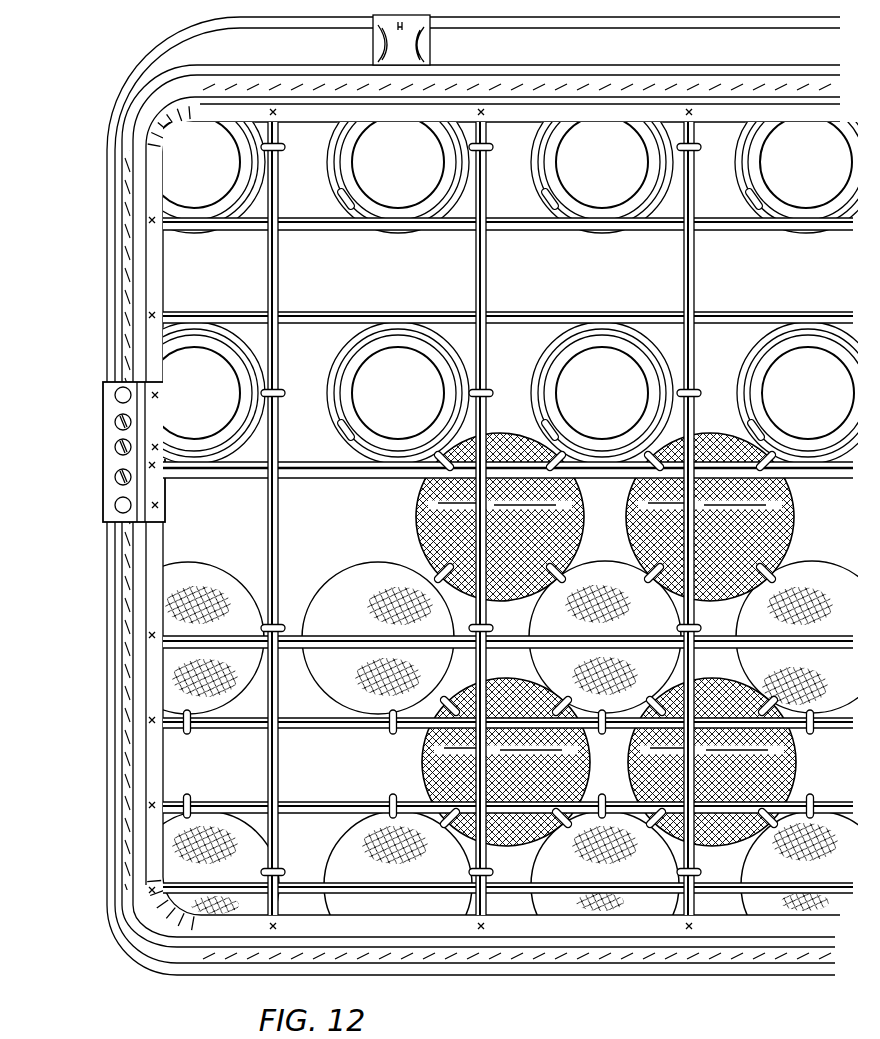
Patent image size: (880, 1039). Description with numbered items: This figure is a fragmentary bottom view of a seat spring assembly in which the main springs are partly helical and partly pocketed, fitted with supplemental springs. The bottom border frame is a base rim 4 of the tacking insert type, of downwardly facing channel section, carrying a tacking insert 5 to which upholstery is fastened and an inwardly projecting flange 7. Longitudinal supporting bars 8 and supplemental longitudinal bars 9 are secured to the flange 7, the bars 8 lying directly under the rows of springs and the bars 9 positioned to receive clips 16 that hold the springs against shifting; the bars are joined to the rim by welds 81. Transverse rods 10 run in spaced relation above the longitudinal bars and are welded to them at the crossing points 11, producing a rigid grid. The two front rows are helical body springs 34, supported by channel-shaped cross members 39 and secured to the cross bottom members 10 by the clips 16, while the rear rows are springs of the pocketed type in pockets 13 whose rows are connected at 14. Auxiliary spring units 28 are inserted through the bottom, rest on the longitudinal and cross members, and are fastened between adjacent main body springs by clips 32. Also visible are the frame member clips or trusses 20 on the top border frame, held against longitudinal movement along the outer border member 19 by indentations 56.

The base rim 4 is at (690, 66).
The tacking insert 5 is at (742, 85).
The inwardly projecting flange 7 is at (776, 116).
The longitudinal supporting bars 8 is at (298, 632).
The supplemental longitudinal bars 9 is at (233, 797).
The transverse rods 10 is at (266, 273).
The welds at crossing points 11 is at (283, 708).
The pockets 13 is at (357, 813).
The pocket connections 14 is at (293, 817).
The clips 16 is at (282, 150).
The outer border member 19 is at (617, 22).
The frame member clips or trusses 20 is at (425, 52).
The auxiliary spring units 28 is at (428, 512).
The clips 32 is at (662, 450).
The helical body springs 34 is at (215, 198).
The channel-shaped cross members 39 is at (300, 318).
The indentations 56 is at (379, 38).
The welds 81 is at (692, 116).